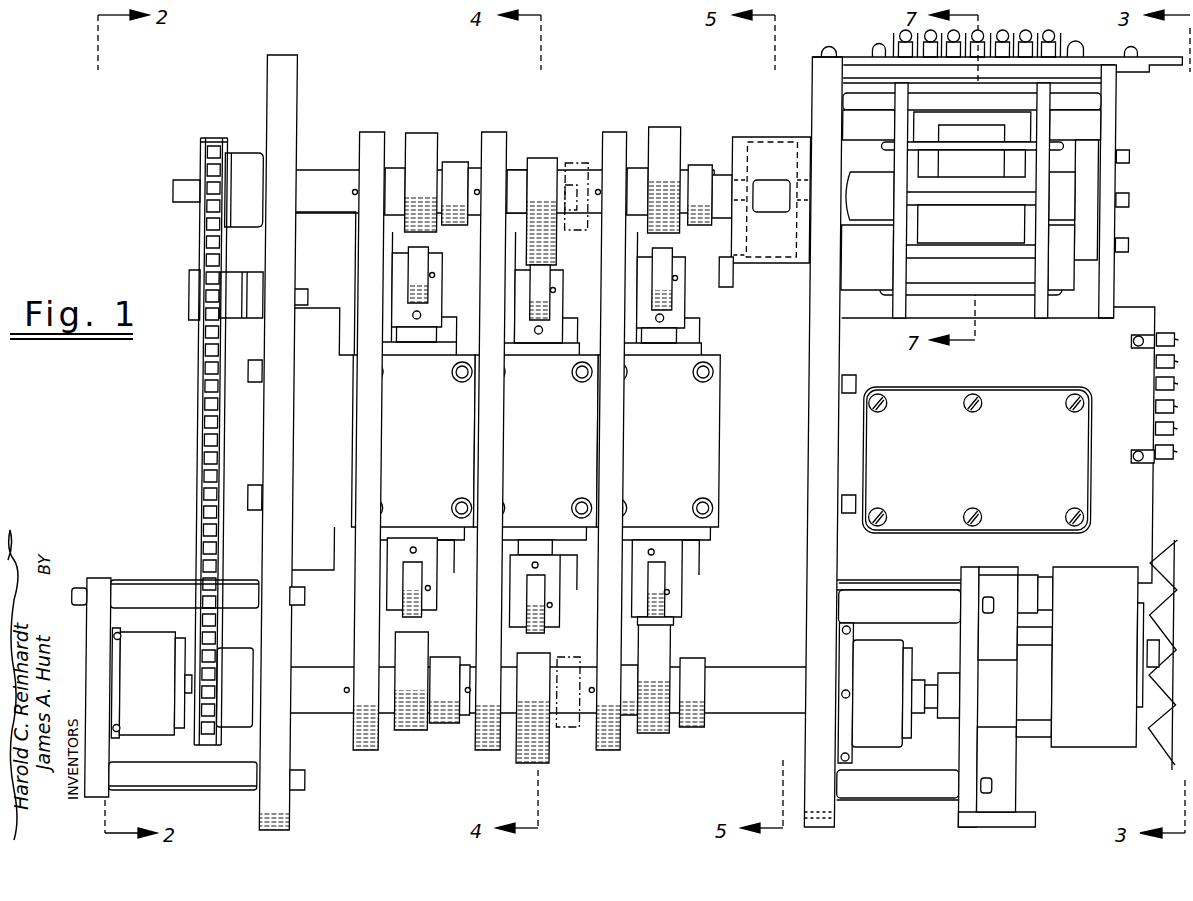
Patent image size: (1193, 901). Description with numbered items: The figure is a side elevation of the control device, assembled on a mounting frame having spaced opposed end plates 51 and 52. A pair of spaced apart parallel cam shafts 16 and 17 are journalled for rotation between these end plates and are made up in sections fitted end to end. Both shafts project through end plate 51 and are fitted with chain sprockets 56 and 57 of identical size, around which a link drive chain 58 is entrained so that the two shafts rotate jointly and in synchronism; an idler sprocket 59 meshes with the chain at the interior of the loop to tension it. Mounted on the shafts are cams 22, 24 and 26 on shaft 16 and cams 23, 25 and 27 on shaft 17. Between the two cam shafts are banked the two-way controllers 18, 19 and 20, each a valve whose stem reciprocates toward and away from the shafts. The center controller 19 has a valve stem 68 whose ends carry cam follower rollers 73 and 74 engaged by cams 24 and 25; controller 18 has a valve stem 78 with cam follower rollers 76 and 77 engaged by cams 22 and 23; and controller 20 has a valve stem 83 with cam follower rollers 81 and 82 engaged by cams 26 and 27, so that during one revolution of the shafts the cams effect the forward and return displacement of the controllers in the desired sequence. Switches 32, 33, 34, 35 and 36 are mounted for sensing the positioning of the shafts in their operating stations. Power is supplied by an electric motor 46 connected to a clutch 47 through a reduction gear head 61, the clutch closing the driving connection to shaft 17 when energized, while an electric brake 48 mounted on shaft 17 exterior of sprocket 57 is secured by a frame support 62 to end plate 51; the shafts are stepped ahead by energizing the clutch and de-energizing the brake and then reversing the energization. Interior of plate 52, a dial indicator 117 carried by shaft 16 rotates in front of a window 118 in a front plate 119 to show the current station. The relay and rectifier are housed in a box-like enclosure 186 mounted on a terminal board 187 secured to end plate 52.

The cam shaft 16 is at (333, 172).
The cam shaft 17 is at (323, 700).
The two-way controller 18 is at (434, 451).
The two-way controller 19 is at (554, 451).
The two-way controller 20 is at (676, 451).
The cam 22 is at (424, 148).
The cam 23 is at (413, 728).
The cam 24 is at (545, 170).
The cam 25 is at (545, 758).
The cam 26 is at (668, 140).
The cam 27 is at (660, 725).
The switch 32 is at (934, 112).
The switch 33 is at (932, 152).
The switch 34 is at (960, 198).
The switch 35 is at (982, 250).
The switch 36 is at (942, 285).
The electric motor 46 is at (1114, 665).
The clutch 47 is at (892, 703).
The brake 48 is at (166, 703).
The end plate 51 is at (268, 80).
The end plate 52 is at (818, 85).
The chain sprocket 56 is at (240, 165).
The chain sprocket 57 is at (256, 703).
The link drive chain 58 is at (203, 455).
The idler sprocket 59 is at (235, 280).
The reduction gear head 61 is at (1008, 703).
The frame support 62 is at (101, 578).
The valve stem 68 is at (540, 545).
The cam follower roller 73 is at (548, 272).
The cam follower roller 74 is at (545, 635).
The cam follower roller 76 is at (425, 252).
The cam follower roller 77 is at (422, 618).
The valve stem 78 is at (420, 335).
The cam follower roller 81 is at (668, 252).
The cam follower roller 82 is at (668, 607).
The valve stem 83 is at (663, 340).
The dial indicator 117 is at (736, 150).
The window 118 is at (766, 190).
The front plate 119 is at (735, 243).
The box-like enclosure 186 is at (994, 468).
The terminal board 187 is at (1140, 517).